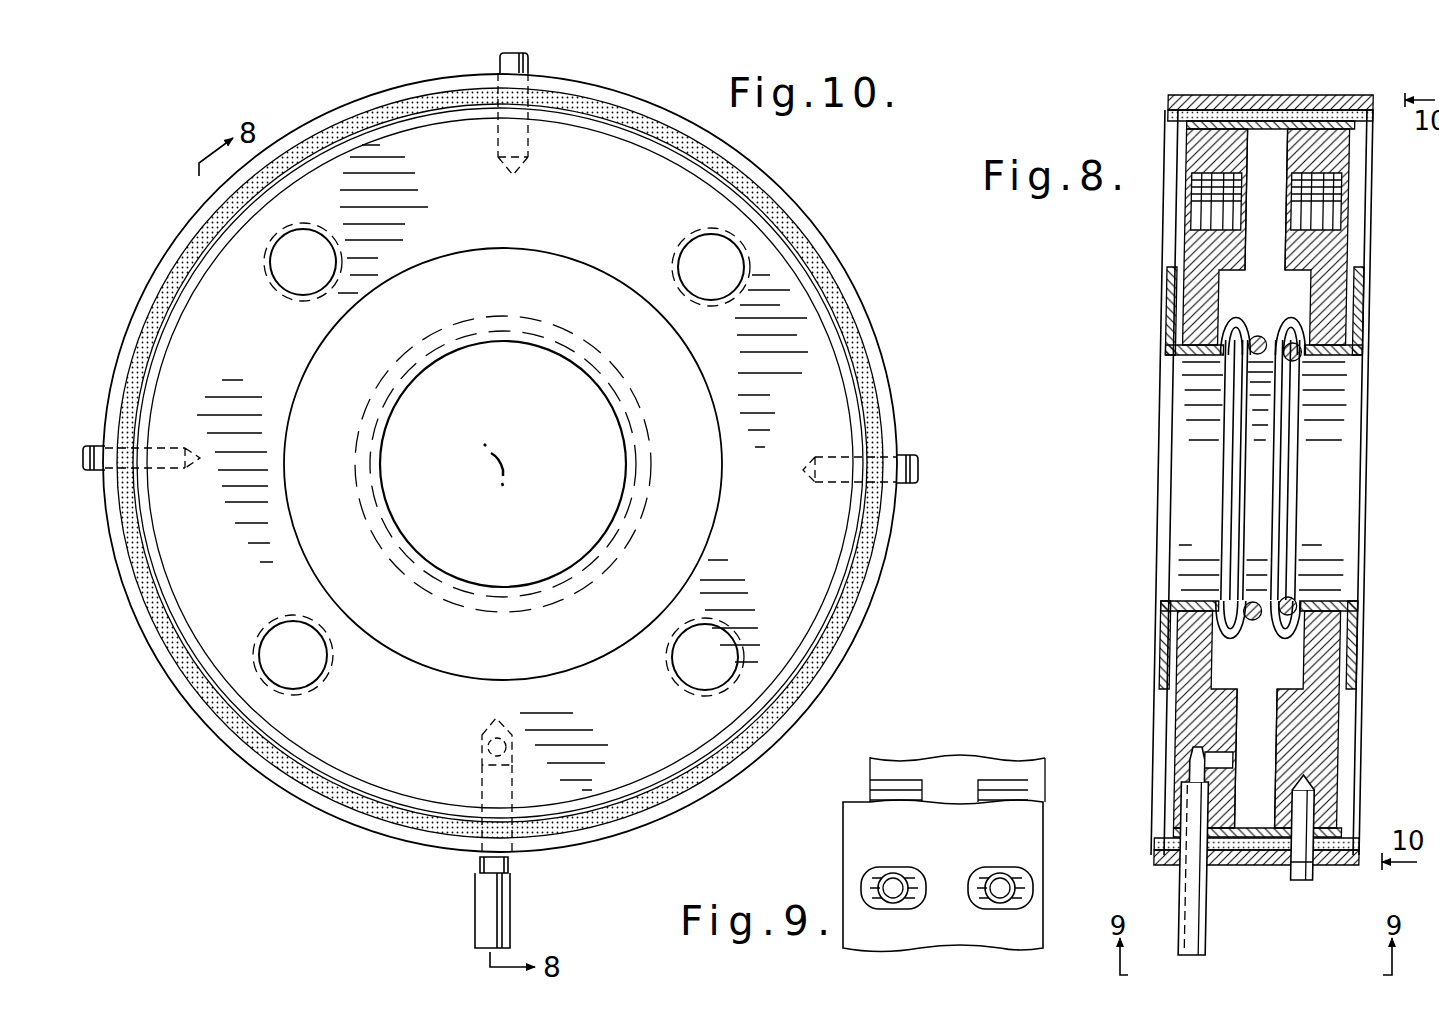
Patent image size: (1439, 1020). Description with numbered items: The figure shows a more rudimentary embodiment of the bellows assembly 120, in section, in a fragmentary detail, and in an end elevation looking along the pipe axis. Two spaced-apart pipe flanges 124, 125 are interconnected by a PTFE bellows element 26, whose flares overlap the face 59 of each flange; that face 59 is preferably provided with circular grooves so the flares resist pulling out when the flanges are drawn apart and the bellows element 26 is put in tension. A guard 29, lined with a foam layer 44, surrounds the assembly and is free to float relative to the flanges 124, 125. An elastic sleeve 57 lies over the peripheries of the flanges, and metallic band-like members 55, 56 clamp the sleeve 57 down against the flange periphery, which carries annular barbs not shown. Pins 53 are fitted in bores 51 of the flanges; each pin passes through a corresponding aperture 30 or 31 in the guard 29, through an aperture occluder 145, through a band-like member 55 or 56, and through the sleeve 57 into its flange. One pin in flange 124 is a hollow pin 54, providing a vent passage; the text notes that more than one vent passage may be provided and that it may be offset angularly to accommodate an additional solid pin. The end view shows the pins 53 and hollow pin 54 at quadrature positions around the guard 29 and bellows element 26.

In FIG. 10, the bellows element 26 is at (495, 342).
In FIG. 8, the bellows element 26 is at (1347, 368).
In FIG. 10, the guard 29 is at (363, 98).
In FIG. 8, the guard 29 is at (1280, 95).
In FIG. 9, the guard 29 is at (850, 822).
In FIG. 8, the aperture 30 is at (1175, 862).
In FIG. 9, the aperture 30 is at (878, 872).
In FIG. 8, the aperture 31 is at (1325, 862).
In FIG. 9, the aperture 31 is at (1020, 878).
In FIG. 10, the foam layer 44 is at (783, 205).
In FIG. 8, the foam layer 44 is at (1313, 97).
In FIG. 8, the bore 51 is at (1190, 800).
In FIG. 10, the pin 53 is at (500, 54).
In FIG. 8, the pin 53 is at (1300, 880).
In FIG. 9, the pin 53 is at (998, 874).
In FIG. 10, the hollow pin 54 is at (487, 903).
In FIG. 8, the hollow pin 54 is at (1210, 932).
In FIG. 9, the hollow pin 54 is at (895, 874).
In FIG. 8, the band-like member 55 is at (1205, 103).
In FIG. 9, the band-like member 55 is at (896, 780).
In FIG. 8, the band-like member 56 is at (1373, 95).
In FIG. 9, the band-like member 56 is at (1000, 782).
In FIG. 8, the sleeve 57 is at (1272, 103).
In FIG. 9, the sleeve 57 is at (955, 768).
In FIG. 8, the face 59 is at (1170, 717).
In FIG. 10, the bellows assembly 120 is at (907, 382).
In FIG. 8, the flange 124 is at (1167, 250).
In FIG. 10, the flange 125 is at (828, 543).
In FIG. 8, the flange 125 is at (1352, 250).
In FIG. 8, the aperture occluder 145 is at (1227, 867).